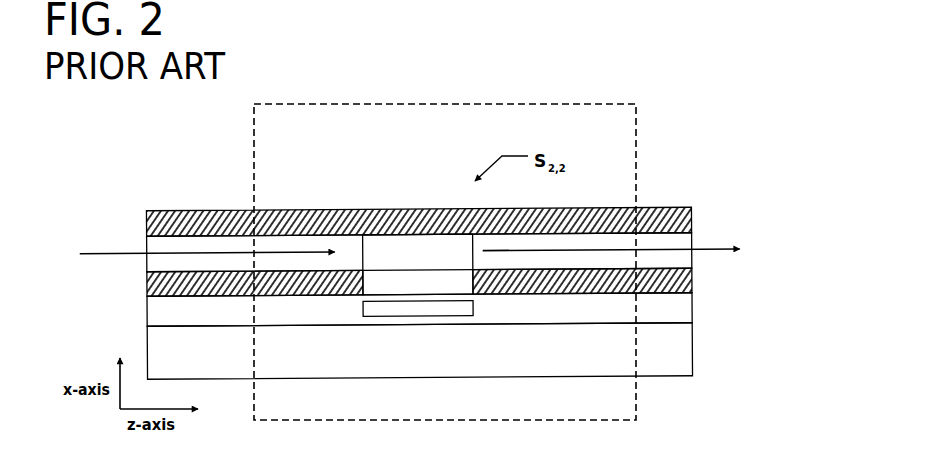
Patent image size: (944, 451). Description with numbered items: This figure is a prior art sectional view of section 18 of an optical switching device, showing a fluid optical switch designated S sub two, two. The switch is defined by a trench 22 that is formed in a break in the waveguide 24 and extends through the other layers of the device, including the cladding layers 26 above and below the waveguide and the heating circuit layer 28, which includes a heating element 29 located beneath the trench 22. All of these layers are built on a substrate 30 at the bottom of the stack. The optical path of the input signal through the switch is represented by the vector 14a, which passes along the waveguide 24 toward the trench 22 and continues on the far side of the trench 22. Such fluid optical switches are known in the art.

The vector 14a is at (118, 252).
The section 18 is at (636, 130).
The trench 22 is at (429, 271).
The waveguide 24 is at (682, 257).
The cladding layers 26 is at (680, 208).
The heating circuit layer 28 is at (682, 312).
The heating element 29 is at (392, 317).
The substrate 30 is at (194, 366).